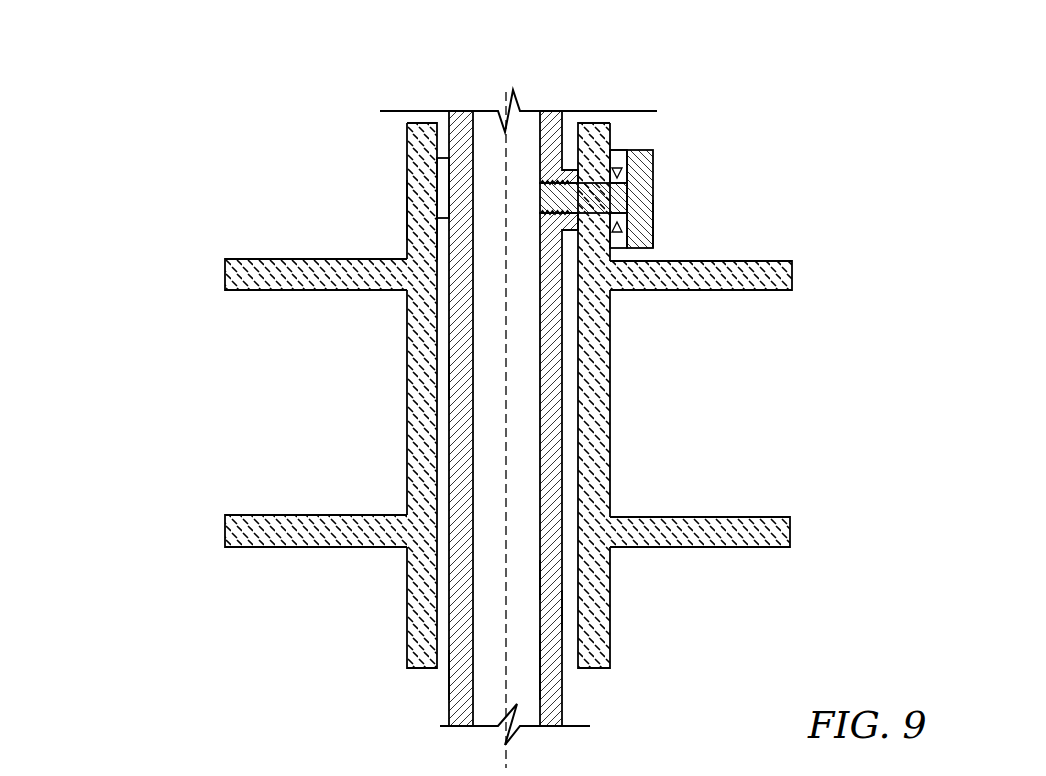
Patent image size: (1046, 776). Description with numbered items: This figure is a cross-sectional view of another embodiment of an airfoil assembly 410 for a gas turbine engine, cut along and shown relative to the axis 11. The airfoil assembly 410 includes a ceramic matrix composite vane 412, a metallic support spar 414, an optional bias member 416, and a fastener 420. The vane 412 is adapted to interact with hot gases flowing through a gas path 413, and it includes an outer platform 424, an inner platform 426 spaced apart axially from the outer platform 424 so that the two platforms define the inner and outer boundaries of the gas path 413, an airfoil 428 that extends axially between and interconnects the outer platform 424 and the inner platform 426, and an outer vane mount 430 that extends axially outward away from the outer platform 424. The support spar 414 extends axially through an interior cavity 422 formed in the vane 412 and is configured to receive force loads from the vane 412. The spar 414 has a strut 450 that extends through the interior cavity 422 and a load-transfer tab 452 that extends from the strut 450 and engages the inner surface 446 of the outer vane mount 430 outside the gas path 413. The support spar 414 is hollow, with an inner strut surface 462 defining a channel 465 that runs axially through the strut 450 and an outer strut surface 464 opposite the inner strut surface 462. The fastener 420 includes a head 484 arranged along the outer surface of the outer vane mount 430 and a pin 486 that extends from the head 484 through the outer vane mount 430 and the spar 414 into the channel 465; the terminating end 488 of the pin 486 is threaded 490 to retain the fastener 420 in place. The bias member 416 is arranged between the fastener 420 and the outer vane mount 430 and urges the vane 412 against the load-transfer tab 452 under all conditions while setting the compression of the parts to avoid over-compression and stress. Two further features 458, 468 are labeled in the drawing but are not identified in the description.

The airfoil assembly 410 is at (156, 122).
The ceramic matrix composite vane 412 is at (803, 352).
The gas path 413 is at (763, 417).
The metallic support spar 414 is at (457, 110).
The bias member 416 is at (621, 145).
The fastener 420 is at (668, 192).
The interior cavity 422 is at (445, 663).
The outer platform 424 is at (792, 272).
The inner platform 426 is at (792, 528).
The airfoil 428 is at (618, 375).
The outer vane mount 430 is at (393, 177).
The inner surface 446 is at (407, 195).
The strut 450 is at (450, 373).
The load-transfer tab 452 is at (569, 157).
The projection 458 is at (437, 182).
The inner strut surface 462 is at (542, 588).
The outer strut surface 464 is at (563, 608).
The channel 465 is at (515, 638).
The gap 468 is at (441, 235).
The head 484 is at (653, 230).
The pin 486 is at (595, 172).
The terminating end 488 is at (538, 198).
The threads 490 is at (565, 185).
The axis 11 is at (506, 623).